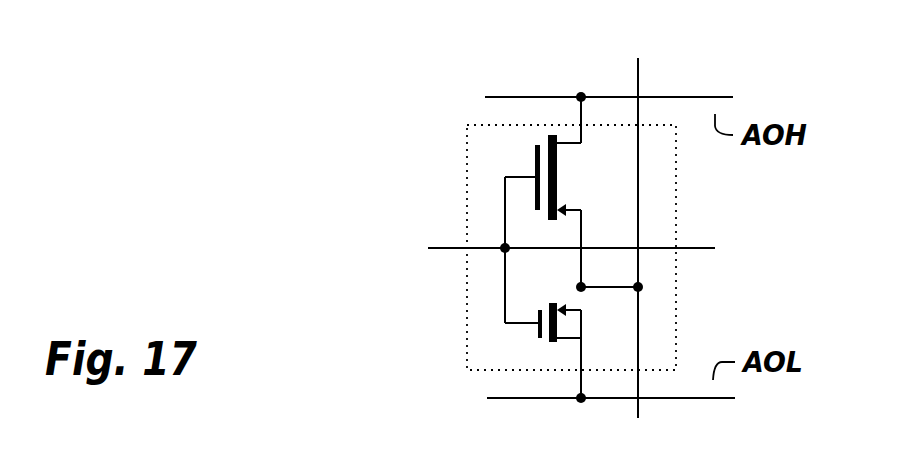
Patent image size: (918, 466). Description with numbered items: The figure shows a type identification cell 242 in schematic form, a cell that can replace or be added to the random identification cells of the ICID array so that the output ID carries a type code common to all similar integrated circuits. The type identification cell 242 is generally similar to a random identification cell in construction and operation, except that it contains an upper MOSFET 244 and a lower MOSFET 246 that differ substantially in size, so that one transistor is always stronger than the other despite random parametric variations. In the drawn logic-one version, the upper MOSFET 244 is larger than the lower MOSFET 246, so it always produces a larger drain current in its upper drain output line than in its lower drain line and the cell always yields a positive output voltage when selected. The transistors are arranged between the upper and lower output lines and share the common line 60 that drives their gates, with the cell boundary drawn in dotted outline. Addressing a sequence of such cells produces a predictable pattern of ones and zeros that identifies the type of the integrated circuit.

The type identification cell 242 is at (718, 72).
The upper MOSFET 244 is at (530, 164).
The lower MOSFET 246 is at (532, 333).
The signal line 60 is at (448, 238).